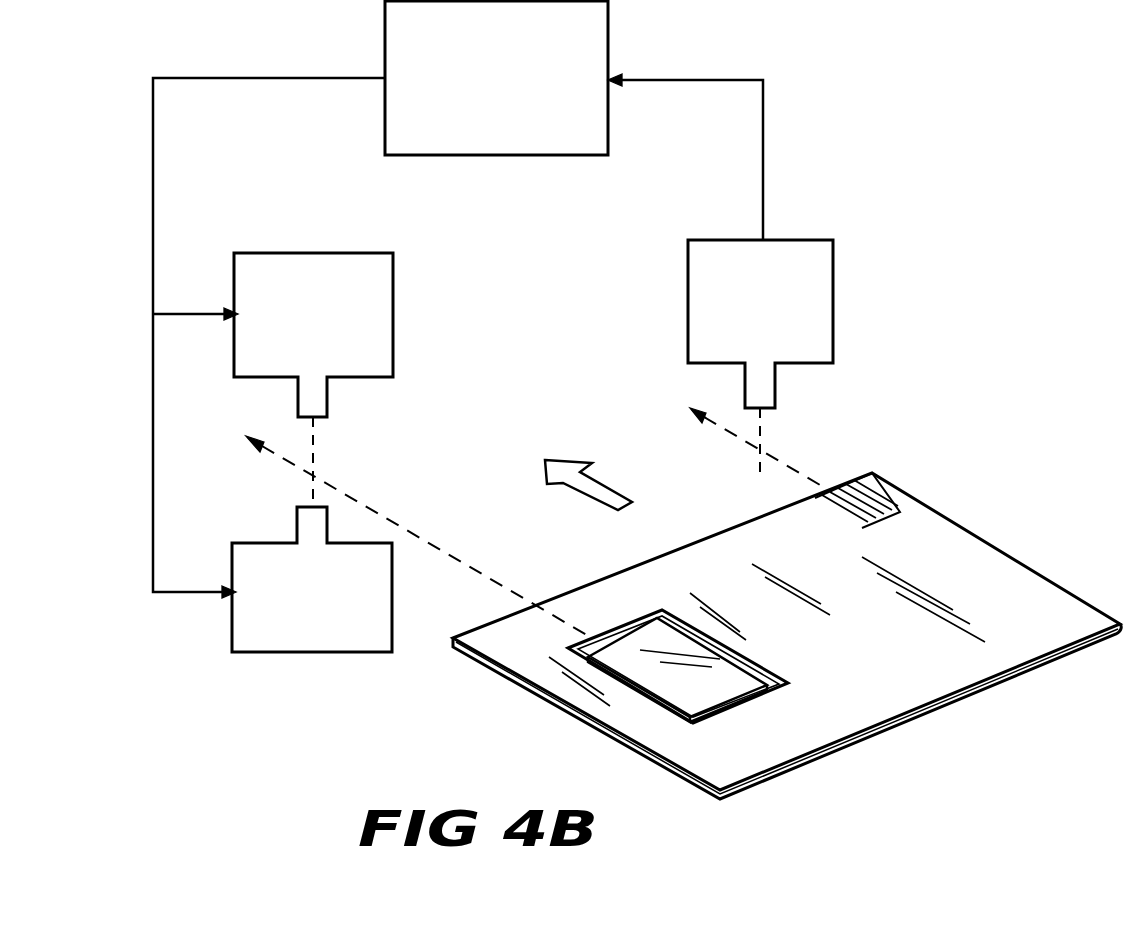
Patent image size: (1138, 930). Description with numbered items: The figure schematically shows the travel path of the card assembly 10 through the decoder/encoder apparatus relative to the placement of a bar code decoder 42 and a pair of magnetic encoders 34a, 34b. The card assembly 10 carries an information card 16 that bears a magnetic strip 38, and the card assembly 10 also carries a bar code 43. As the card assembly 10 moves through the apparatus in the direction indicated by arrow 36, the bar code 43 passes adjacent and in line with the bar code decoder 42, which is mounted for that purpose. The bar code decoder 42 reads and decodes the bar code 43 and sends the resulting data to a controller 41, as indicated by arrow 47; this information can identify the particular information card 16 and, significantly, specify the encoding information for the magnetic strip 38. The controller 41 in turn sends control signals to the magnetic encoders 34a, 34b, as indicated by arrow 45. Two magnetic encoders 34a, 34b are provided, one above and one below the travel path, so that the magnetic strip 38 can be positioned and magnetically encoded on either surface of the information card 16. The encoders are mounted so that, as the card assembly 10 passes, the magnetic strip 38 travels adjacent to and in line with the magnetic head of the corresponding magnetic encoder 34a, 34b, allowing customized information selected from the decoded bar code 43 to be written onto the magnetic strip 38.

The card assembly 10 is at (1026, 508).
The information card 16 is at (669, 638).
The top magnetic encoder 34a is at (393, 292).
The bottom magnetic encoder 34b is at (232, 640).
The arrow indicating travel direction 36 is at (604, 492).
The magnetic strip 38 is at (618, 657).
The controller 41 is at (385, 135).
The bar code decoder 42 is at (833, 343).
The bar code 43 is at (884, 506).
The arrow indicating control signals 45 is at (153, 152).
The arrow indicating decoded data 47 is at (763, 218).